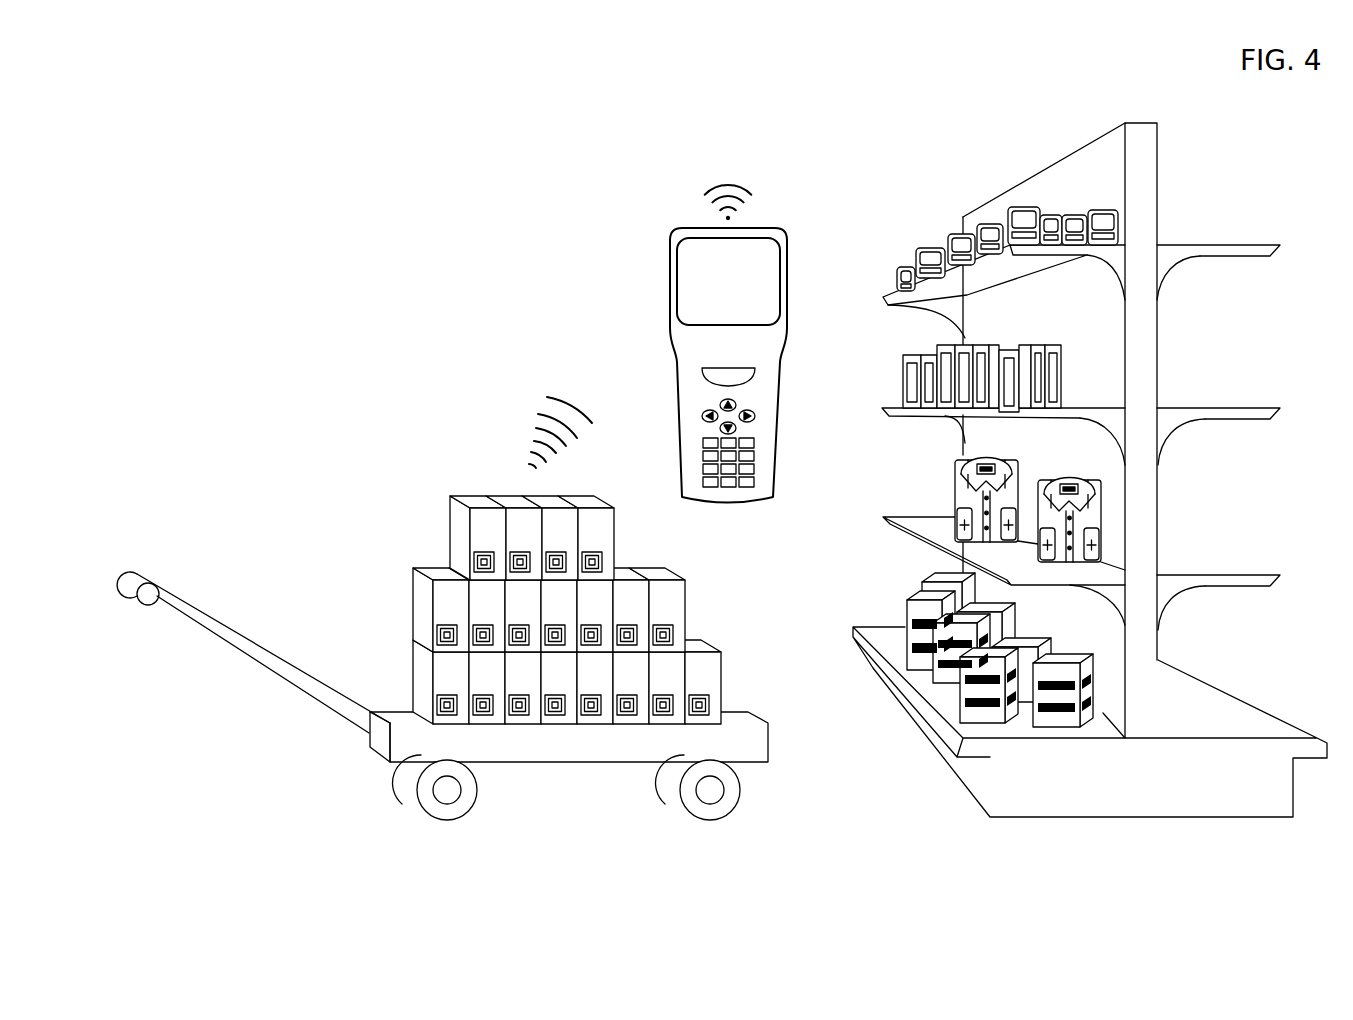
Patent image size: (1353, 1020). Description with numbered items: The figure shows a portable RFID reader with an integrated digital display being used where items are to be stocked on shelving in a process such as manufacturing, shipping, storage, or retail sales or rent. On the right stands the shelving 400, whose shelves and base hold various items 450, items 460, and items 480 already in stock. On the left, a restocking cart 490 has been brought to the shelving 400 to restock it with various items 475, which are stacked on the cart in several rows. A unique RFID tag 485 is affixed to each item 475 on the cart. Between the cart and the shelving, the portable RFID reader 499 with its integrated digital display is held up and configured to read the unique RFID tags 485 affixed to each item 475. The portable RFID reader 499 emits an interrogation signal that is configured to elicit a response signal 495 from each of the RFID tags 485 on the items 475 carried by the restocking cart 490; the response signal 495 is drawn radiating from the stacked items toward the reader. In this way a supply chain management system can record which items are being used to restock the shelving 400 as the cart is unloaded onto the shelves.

The shelving 400 is at (1130, 123).
The items 450 is at (907, 598).
The items 460 is at (918, 262).
The items 475 is at (672, 568).
The items 480 is at (955, 487).
The RFID tags 485 is at (715, 692).
The restocking cart 490 is at (533, 763).
The response signal 495 is at (527, 392).
The portable RFID reader 499 is at (783, 349).